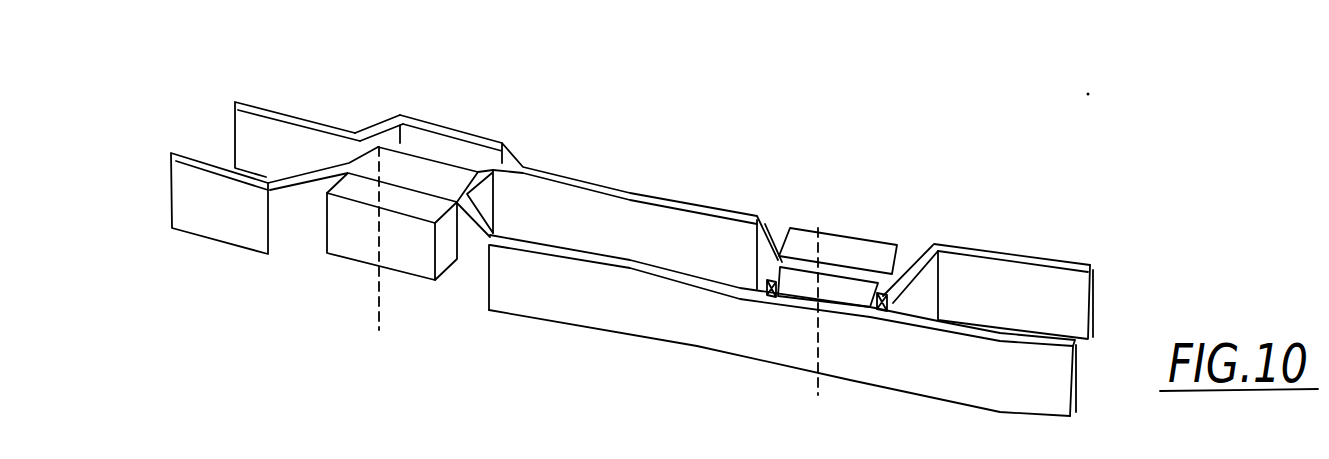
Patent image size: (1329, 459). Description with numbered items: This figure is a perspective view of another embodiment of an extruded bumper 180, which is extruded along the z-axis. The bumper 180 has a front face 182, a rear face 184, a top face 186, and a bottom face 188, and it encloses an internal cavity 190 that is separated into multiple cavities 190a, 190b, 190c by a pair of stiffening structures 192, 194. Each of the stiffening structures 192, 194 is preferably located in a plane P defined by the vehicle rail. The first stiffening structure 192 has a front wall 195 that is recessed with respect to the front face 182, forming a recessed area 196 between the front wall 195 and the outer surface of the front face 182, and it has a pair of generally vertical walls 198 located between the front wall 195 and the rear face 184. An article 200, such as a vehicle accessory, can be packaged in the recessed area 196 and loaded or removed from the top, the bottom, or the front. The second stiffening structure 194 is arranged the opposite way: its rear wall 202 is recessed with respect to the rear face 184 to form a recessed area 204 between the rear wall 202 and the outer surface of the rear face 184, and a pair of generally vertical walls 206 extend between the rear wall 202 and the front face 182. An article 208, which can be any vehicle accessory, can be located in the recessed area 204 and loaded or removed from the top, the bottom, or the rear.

The bumper 180 is at (700, 155).
The front face 182 is at (697, 346).
The rear face 184 is at (730, 208).
The top face 186 is at (517, 170).
The bottom face 188 is at (513, 316).
The internal cavity 190 is at (613, 218).
The cavity 190a is at (268, 161).
The cavity 190b is at (672, 256).
The cavity 190c is at (1043, 280).
The first stiffening structure 192 is at (438, 167).
The second stiffening structure 194 is at (977, 233).
The front wall 195 is at (436, 203).
The recessed area 196 is at (318, 249).
The generally vertical walls 198 is at (360, 165).
The article 200 is at (363, 252).
The rear wall 202 is at (806, 243).
The recessed area 204 is at (948, 236).
The generally vertical walls 206 is at (773, 300).
The article 208 is at (857, 290).
The plane P is at (378, 180).